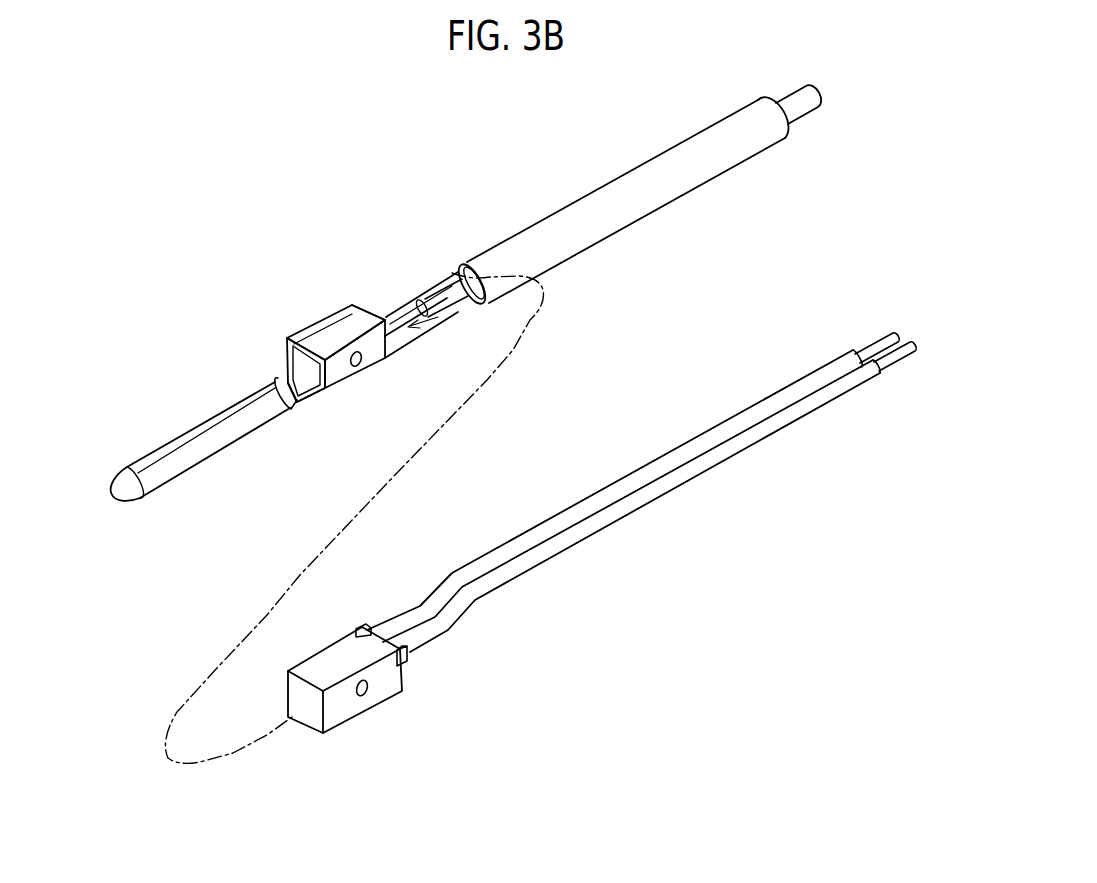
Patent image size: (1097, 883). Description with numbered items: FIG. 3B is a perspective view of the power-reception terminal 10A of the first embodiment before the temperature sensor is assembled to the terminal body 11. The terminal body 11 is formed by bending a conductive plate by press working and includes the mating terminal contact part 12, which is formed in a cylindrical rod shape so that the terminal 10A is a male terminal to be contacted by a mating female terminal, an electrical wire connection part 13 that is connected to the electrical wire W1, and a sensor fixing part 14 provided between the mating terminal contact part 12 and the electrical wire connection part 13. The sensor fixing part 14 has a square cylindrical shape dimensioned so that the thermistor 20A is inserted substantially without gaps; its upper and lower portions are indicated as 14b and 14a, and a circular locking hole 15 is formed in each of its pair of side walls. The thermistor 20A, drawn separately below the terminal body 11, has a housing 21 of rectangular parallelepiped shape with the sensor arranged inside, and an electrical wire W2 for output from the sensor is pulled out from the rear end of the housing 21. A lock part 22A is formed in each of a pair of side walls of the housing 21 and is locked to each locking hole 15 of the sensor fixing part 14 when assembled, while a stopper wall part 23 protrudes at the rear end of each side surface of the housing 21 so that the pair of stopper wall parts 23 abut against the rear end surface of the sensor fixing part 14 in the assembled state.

The power-reception terminal 10A is at (160, 538).
The terminal body 11 is at (243, 450).
The mating terminal contact part 12 is at (195, 447).
The electrical wire connection part 13 is at (440, 290).
The sensor fixing part 14 is at (330, 337).
The lower part of box portion 14a is at (311, 398).
The upper part of box portion 14b is at (378, 303).
The locking hole 15 is at (361, 365).
The thermistor 20A is at (278, 711).
The housing 21 is at (342, 703).
The lock part 22A is at (367, 690).
The stopper wall part 23 is at (372, 631).
The electrical wire W1 is at (612, 200).
The electrical wire W2 is at (720, 453).